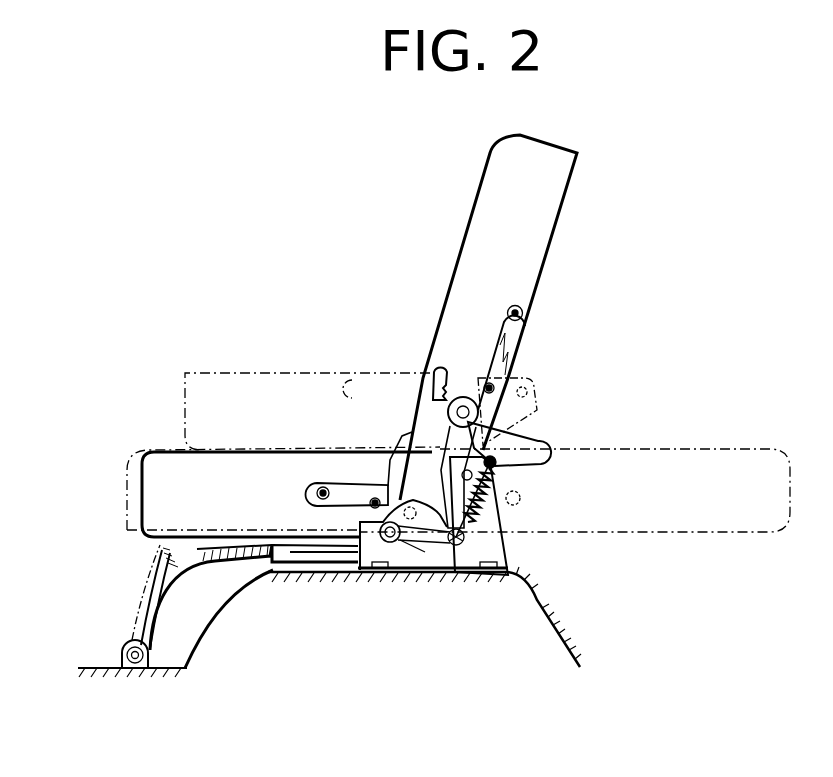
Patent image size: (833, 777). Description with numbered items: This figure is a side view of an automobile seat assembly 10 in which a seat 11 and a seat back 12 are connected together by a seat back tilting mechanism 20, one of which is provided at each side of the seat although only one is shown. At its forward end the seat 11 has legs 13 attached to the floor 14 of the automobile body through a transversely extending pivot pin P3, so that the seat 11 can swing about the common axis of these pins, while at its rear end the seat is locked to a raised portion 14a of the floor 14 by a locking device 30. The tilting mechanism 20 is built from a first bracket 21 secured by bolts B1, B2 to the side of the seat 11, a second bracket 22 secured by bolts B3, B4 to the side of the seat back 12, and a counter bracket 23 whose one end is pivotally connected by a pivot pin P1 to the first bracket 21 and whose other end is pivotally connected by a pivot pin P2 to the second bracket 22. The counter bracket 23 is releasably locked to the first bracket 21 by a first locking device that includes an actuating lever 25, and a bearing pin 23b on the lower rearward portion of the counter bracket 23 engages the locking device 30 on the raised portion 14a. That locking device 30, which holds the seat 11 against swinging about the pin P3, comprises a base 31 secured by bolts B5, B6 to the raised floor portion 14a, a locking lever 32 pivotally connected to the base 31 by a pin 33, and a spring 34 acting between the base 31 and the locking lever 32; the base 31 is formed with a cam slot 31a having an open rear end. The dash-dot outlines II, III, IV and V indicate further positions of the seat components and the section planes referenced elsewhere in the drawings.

The seat assembly 10 is at (413, 290).
The seat 11 is at (150, 515).
The seat back 12 is at (560, 192).
The legs 13 is at (157, 593).
The floor 14 is at (100, 665).
The raised portion of the floor 14a is at (300, 575).
The seat back tilting mechanism 20 is at (535, 411).
The first bracket 21 is at (352, 490).
The second bracket 22 is at (522, 337).
The counter bracket 23 is at (415, 438).
The bearing pin 23b is at (455, 552).
The actuating lever 25 is at (428, 368).
The locking device 30 is at (518, 537).
The base 31 is at (510, 552).
The cam slot 31a is at (425, 552).
The locking lever 32 is at (540, 443).
The pin 33 is at (497, 466).
The spring 34 is at (492, 488).
The bolt B1 is at (315, 491).
The bolt B2 is at (366, 504).
The bolt B3 is at (515, 304).
The bolt B4 is at (489, 382).
The bolt B5 is at (373, 569).
The bolt B6 is at (500, 578).
The pivot pin P1 is at (408, 540).
The pivot pin P2 is at (466, 398).
The pivot pin P3 is at (137, 663).
The seat cushion position II is at (626, 508).
The seat cushion position III is at (127, 482).
The position IV is at (363, 378).
The seat cushion position V is at (187, 407).